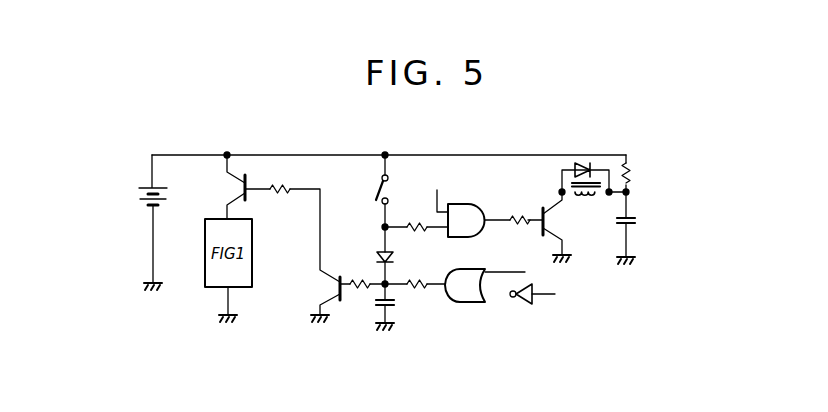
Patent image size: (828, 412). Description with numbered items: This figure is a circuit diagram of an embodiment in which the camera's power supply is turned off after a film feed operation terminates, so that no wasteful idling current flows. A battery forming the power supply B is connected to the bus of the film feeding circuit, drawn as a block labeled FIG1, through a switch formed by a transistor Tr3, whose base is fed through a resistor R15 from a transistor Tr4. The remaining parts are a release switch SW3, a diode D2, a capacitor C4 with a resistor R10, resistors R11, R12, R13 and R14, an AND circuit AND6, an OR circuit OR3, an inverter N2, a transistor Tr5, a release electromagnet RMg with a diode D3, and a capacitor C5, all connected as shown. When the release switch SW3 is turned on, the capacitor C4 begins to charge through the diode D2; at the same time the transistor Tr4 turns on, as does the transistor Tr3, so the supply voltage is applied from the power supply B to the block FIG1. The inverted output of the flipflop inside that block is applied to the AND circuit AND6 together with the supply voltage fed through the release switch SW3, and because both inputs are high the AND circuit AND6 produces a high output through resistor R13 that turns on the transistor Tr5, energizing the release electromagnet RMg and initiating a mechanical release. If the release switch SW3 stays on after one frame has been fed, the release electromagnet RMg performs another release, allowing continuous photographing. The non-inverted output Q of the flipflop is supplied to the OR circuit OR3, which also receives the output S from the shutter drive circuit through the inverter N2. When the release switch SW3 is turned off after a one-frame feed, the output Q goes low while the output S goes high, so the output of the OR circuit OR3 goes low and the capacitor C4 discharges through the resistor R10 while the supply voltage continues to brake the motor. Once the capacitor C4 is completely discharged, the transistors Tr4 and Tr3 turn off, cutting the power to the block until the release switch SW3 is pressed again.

The power supply B is at (137, 197).
The transistor Tr3 is at (249, 181).
The resistor R15 is at (284, 193).
The transistor Tr4 is at (322, 296).
The resistor R10 is at (358, 279).
The release switch SW3 is at (378, 187).
The resistor R11 is at (416, 223).
The diode D2 is at (379, 249).
The capacitor C4 is at (373, 312).
The resistor R12 is at (416, 293).
The AND circuit AND6 is at (475, 204).
The resistor R13 is at (519, 226).
The OR circuit OR3 is at (470, 305).
The inverter N2 is at (523, 306).
The non-inverted output Q is at (534, 276).
The output S is at (564, 297).
The transistor Tr5 is at (564, 245).
The diode D3 is at (588, 160).
The release electromagnet RMg is at (590, 207).
The resistor R14 is at (633, 181).
The capacitor C5 is at (636, 225).